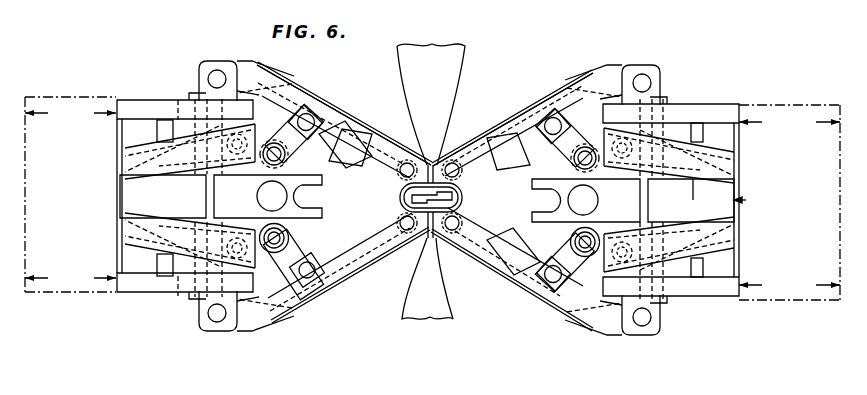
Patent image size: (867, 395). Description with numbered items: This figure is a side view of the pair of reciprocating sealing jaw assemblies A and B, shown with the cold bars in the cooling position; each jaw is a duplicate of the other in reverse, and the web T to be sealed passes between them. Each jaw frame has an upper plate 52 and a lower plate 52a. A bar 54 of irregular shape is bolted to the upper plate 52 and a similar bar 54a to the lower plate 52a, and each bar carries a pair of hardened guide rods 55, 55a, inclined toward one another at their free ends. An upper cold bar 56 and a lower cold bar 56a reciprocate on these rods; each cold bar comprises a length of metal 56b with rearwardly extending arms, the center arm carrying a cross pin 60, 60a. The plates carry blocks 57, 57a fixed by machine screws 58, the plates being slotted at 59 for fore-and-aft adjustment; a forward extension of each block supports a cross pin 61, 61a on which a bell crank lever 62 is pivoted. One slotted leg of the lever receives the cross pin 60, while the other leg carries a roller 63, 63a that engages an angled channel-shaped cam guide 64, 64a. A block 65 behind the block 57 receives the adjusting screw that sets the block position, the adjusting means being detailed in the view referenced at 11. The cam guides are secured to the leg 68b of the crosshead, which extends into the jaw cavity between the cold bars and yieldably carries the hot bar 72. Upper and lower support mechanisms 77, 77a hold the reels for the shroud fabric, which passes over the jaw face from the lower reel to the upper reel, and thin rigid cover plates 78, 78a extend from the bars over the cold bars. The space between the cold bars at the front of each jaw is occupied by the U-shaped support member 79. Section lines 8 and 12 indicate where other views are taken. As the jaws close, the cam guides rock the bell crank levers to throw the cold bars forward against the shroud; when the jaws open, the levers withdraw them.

The upper plate 52 is at (726, 122).
The lower plate 52a is at (732, 297).
The bar 54 is at (592, 82).
The bar 54a is at (604, 338).
The hardened guide rod 55 is at (592, 76).
The hardened guide rod 55a is at (596, 292).
The cold bar 56 is at (466, 143).
The cold bar 56a is at (472, 226).
The length of metal 56b is at (435, 157).
The block 57 is at (680, 135).
The block 57a is at (680, 273).
The machine screws 58 is at (668, 100).
The slot 59 is at (672, 107).
The cross pin 60 is at (552, 117).
The cross pin 60a is at (548, 284).
The cross pin 61 is at (578, 163).
The cross pin 61a is at (585, 256).
The bell crank lever 62 is at (580, 246).
The roller 63 is at (613, 163).
The roller 63a is at (434, 268).
The cam guide 64 is at (429, 153).
The cam guide 64a is at (429, 242).
The block 65 is at (728, 130).
The leg 68b is at (746, 200).
The hot bar 72 is at (626, 213).
The upper support mechanism 77 is at (641, 64).
The lower support mechanism 77a is at (645, 322).
The cover plate 78 is at (481, 127).
The cover plate 78a is at (488, 268).
The U-shaped support member 79 is at (459, 194).
The section line 8— 8 is at (473, 332).
The detail of adjusting means 11 is at (802, 141).
The section line 12— 12 is at (670, 210).
The jaw assembly A is at (346, 106).
The jaw assembly B is at (519, 76).
The tape T is at (405, 62).